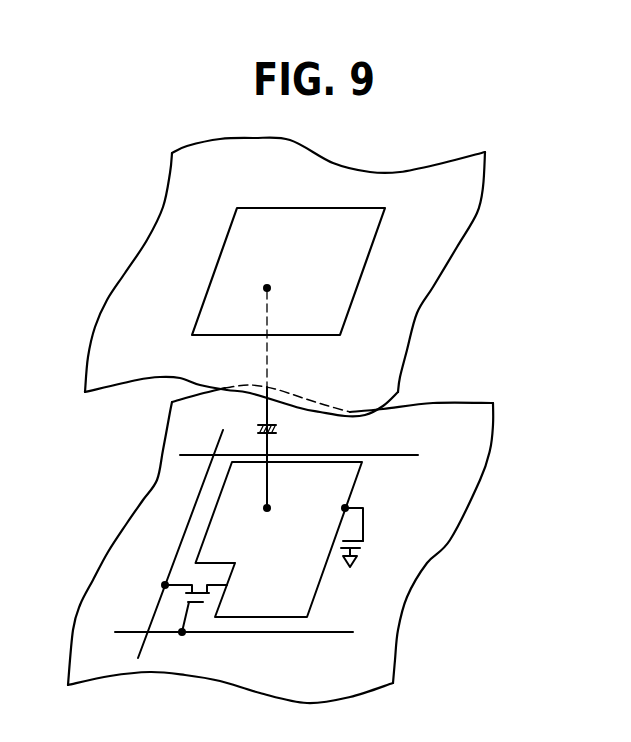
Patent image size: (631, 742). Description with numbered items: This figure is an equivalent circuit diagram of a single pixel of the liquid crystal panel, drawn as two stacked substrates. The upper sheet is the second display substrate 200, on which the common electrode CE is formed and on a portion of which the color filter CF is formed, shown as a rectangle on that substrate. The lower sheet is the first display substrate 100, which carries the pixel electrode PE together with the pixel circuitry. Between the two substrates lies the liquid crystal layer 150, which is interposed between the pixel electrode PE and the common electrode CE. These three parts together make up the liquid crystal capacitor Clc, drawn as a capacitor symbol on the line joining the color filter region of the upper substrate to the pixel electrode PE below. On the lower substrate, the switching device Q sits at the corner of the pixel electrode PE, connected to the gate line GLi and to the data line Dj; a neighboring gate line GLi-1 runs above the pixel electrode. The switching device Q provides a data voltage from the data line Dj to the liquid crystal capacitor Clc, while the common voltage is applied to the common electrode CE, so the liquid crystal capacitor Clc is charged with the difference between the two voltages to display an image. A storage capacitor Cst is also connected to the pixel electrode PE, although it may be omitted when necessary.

The second display substrate 200 is at (316, 276).
The first display substrate 100 is at (507, 498).
The liquid crystal layer 150 is at (128, 430).
The color filter CF is at (378, 227).
The common electrode CE is at (407, 350).
The pixel electrode PE is at (322, 577).
The switching device Q is at (194, 608).
The data line Dj is at (186, 532).
The gate line GLi-1 is at (327, 455).
The gate line GLi is at (252, 632).
The liquid crystal capacitor Clc is at (284, 398).
The storage capacitor Cst is at (370, 531).